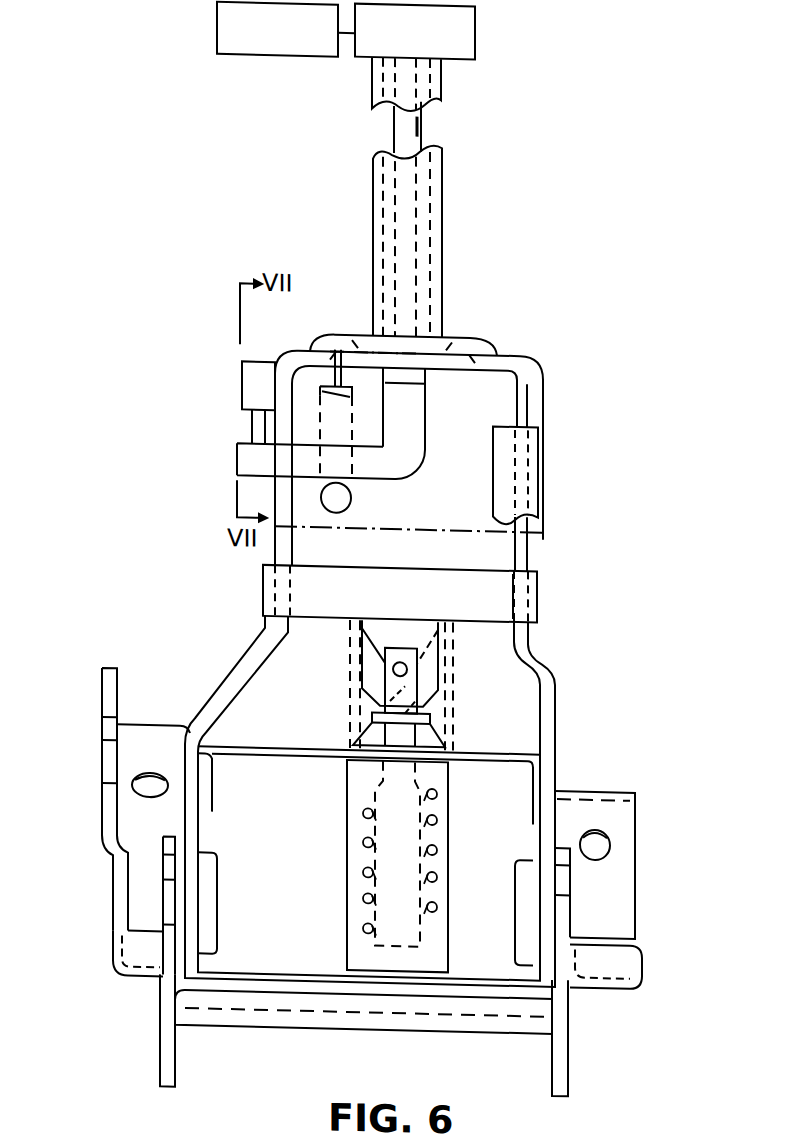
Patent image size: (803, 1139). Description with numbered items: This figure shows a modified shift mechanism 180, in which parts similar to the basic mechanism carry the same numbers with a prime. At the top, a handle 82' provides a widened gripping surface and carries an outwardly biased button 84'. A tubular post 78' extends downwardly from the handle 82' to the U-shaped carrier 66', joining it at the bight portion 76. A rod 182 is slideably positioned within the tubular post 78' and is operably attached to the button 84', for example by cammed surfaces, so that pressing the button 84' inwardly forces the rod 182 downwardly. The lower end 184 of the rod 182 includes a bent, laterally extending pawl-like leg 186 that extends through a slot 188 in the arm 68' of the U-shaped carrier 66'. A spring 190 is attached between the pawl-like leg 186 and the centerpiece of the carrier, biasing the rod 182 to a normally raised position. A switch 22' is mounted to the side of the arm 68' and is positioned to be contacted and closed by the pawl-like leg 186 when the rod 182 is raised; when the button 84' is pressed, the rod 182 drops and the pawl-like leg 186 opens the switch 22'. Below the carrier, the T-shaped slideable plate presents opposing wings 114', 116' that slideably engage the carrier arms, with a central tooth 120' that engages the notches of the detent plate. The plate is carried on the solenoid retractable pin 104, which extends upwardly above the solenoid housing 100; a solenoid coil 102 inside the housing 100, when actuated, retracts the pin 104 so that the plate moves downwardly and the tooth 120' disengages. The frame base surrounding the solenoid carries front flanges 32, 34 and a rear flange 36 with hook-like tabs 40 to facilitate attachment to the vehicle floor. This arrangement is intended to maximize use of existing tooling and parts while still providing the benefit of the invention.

The shift mechanism 180 is at (582, 224).
The button 84' is at (272, 45).
The handle 82' is at (442, 42).
The rod 182 is at (425, 130).
The tubular post 78' is at (434, 241).
The bight portion 76 is at (393, 331).
The U-shaped carrier 66' is at (447, 487).
The arm 68' is at (232, 535).
The switch 22' is at (212, 398).
The slot 188 is at (237, 466).
The lower end 184 is at (425, 419).
The pawl-like leg 186 is at (237, 485).
The spring 190 is at (337, 420).
The wing 114' is at (400, 594).
The tooth 120' is at (401, 666).
The wing 116' is at (488, 596).
The front flange 32 is at (100, 706).
The front flange 34 is at (637, 831).
The rear flange 36 is at (160, 1063).
The hook-like tab 40 is at (552, 1080).
The solenoid housing 100 is at (347, 959).
The solenoid coil 102 is at (368, 840).
The solenoid retractable pin 104 is at (388, 807).